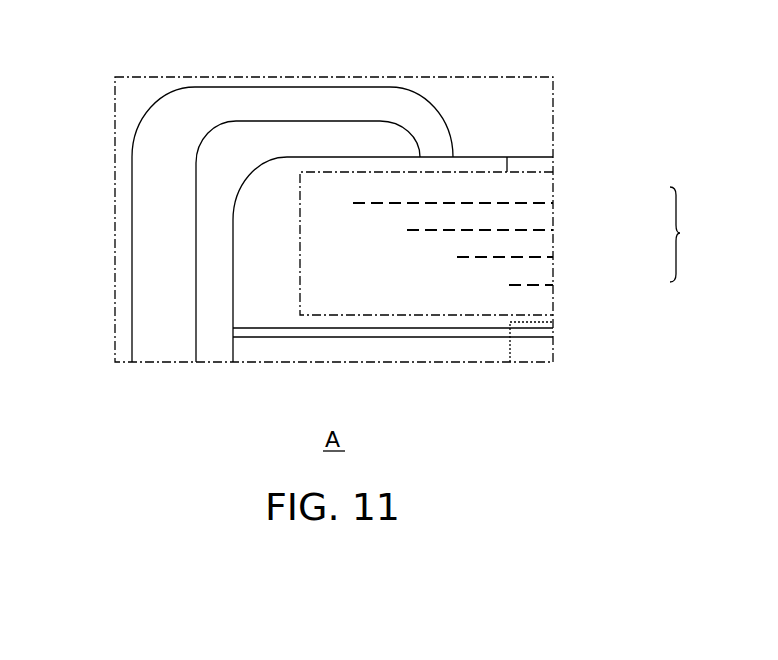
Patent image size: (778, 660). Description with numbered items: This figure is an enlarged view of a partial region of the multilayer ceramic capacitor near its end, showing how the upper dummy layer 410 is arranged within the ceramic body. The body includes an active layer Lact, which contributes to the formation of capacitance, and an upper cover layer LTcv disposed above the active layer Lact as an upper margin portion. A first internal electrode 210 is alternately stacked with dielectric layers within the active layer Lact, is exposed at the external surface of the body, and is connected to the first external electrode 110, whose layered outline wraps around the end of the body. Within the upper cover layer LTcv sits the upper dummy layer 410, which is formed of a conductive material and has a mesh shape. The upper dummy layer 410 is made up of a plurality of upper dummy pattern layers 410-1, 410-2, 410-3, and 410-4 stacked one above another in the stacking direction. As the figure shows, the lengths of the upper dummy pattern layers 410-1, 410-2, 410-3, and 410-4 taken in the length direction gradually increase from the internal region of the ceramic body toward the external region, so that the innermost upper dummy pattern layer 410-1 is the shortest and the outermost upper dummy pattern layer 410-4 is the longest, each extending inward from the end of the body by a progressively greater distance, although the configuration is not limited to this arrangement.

The first external electrode 110 is at (143, 107).
The first internal electrode 210 is at (290, 338).
The upper cover layer LTcv is at (507, 172).
The active layer Lact is at (510, 340).
The upper dummy layer 410 is at (699, 234).
The upper dummy pattern layer 410-1 is at (523, 285).
The upper dummy pattern layer 410-2 is at (523, 257).
The upper dummy pattern layer 410-3 is at (523, 230).
The upper dummy pattern layer 410-4 is at (523, 203).